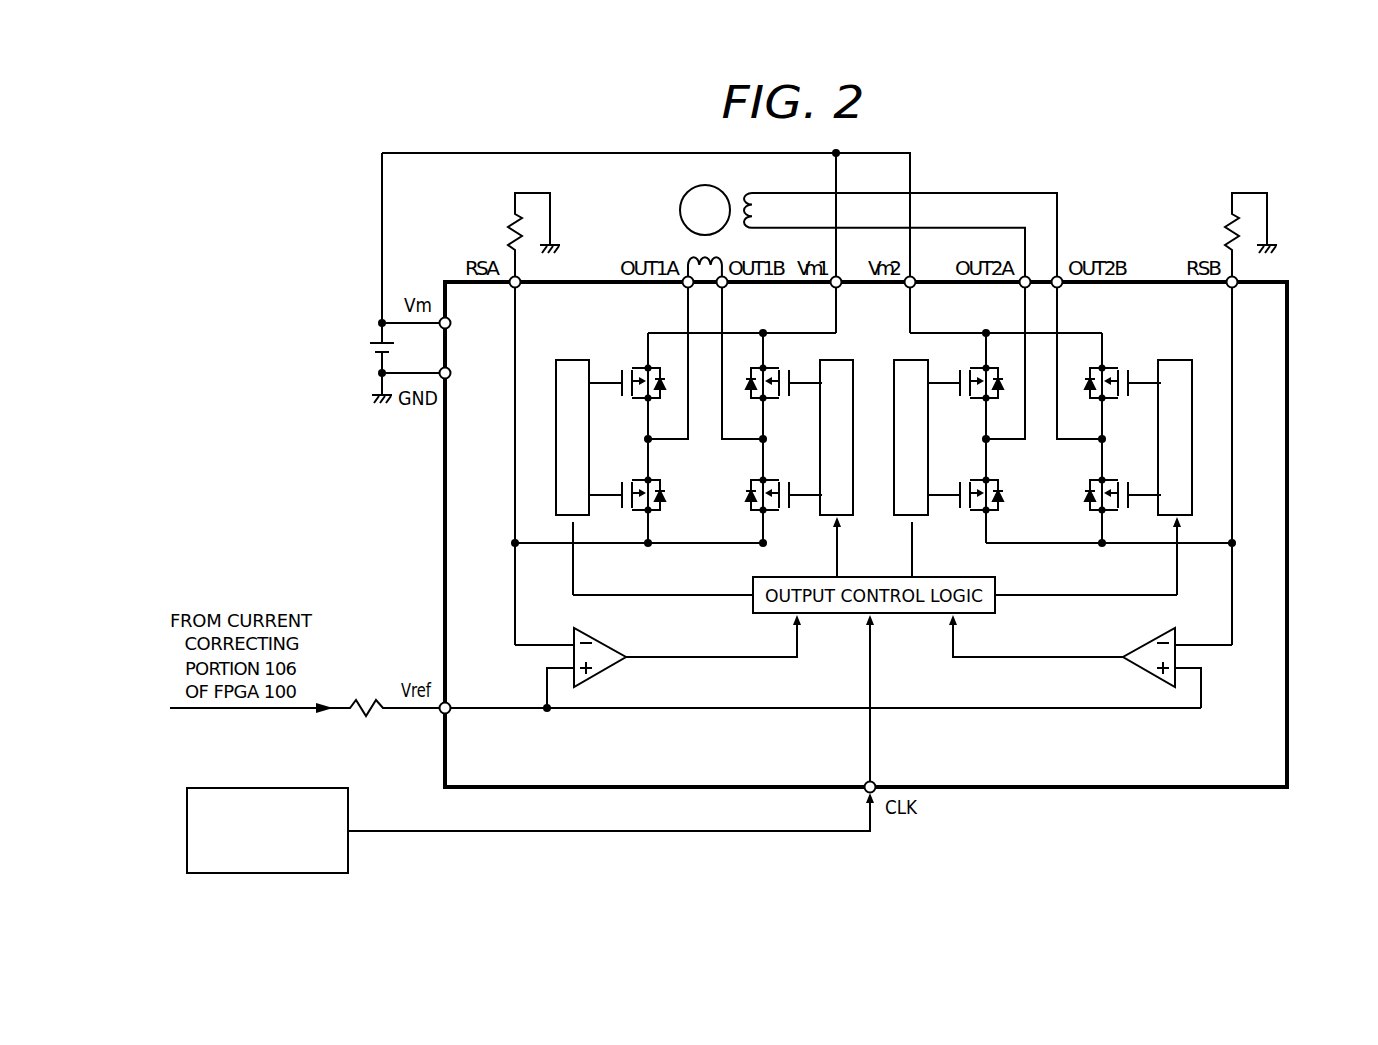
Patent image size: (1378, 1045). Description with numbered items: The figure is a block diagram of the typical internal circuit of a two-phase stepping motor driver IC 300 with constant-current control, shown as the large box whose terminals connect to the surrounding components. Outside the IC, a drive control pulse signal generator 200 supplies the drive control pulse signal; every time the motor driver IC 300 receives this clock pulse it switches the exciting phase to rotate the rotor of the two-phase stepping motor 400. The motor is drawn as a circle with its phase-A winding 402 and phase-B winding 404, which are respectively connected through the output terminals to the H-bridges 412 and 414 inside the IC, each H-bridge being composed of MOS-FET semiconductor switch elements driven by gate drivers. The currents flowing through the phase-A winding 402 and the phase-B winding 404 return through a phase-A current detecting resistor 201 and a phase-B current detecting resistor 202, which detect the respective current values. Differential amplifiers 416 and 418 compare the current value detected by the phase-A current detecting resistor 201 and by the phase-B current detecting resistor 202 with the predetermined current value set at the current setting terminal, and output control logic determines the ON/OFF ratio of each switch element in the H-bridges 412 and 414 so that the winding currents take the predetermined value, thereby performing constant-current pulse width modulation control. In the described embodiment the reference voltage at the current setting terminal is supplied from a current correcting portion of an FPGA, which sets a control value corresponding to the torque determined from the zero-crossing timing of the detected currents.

The drive control pulse signal generator 200 is at (275, 788).
The phase-A current detecting resistor 201 is at (516, 220).
The phase-B current detecting resistor 202 is at (1232, 222).
The motor driver IC 300 is at (1308, 298).
The two-phase stepping motor 400 is at (682, 209).
The phase-A winding 402 is at (690, 252).
The phase-B winding 404 is at (740, 192).
The H-bridge 412 is at (633, 348).
The H-bridge 414 is at (1117, 348).
The differential amplifier 416 is at (608, 640).
The differential amplifier 418 is at (1140, 640).